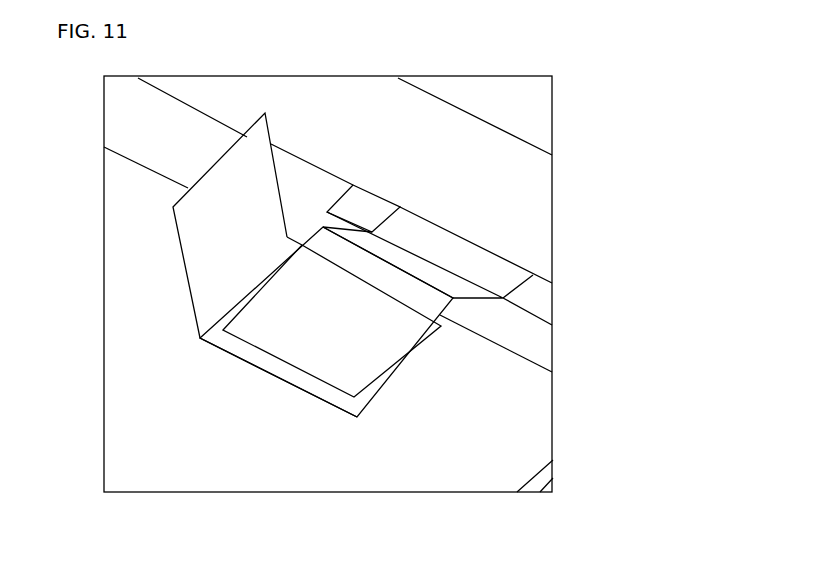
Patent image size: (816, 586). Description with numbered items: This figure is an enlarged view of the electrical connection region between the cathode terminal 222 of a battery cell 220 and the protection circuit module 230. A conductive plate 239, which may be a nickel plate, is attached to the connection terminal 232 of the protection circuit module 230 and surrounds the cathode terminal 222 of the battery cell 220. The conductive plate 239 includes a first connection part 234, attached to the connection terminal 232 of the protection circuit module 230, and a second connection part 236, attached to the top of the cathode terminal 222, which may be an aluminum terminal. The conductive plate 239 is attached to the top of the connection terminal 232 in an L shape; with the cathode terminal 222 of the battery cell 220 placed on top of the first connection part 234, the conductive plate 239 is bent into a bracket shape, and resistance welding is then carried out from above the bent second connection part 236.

The battery cell 220 is at (535, 113).
The cathode terminal 222 is at (413, 297).
The protection circuit module 230 is at (477, 460).
The connection terminal 232 is at (408, 367).
The first connection part 234 is at (232, 349).
The second connection part 236 is at (222, 220).
The conductive plate 239 is at (298, 395).